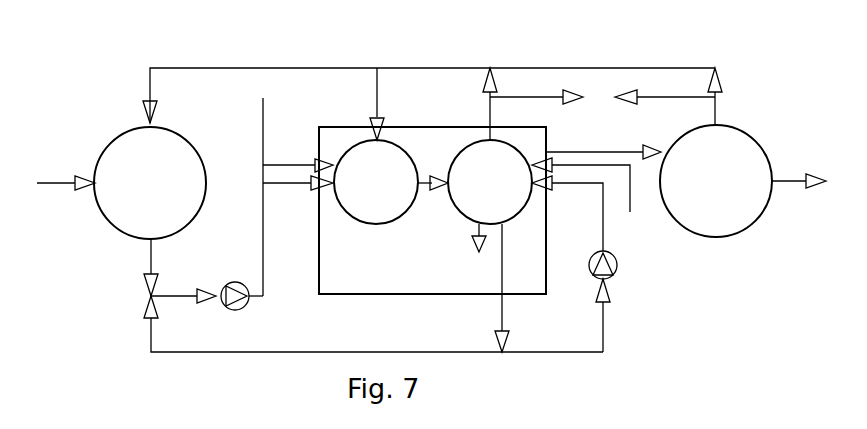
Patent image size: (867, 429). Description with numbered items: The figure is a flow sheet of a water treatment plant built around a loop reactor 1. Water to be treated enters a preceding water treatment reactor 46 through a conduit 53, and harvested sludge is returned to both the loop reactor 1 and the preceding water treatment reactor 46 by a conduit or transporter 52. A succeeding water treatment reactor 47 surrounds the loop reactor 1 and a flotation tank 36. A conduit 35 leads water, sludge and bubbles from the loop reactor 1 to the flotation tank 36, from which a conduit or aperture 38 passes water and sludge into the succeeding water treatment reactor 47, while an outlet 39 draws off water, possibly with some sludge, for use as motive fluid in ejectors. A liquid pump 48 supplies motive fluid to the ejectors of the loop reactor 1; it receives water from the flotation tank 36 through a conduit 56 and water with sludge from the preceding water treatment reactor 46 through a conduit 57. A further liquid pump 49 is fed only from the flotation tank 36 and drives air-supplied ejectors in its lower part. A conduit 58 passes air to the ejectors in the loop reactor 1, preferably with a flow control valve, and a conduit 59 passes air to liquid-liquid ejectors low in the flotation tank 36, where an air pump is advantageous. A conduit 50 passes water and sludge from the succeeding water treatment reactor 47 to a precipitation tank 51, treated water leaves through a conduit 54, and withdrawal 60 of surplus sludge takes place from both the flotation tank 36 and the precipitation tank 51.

The loop reactor 1 is at (357, 157).
The conduit 35 is at (427, 190).
The flotation tank 36 is at (470, 157).
The conduit or aperture 38 is at (470, 252).
The outlet 39 is at (507, 311).
The preceding water treatment reactor 46 is at (120, 200).
The succeeding water treatment reactor 47 is at (347, 282).
The liquid pump 48 is at (236, 277).
The further liquid pump 49 is at (618, 272).
The conduit 50 is at (587, 149).
The precipitation tank 51 is at (710, 218).
The conduit or transporter 52 is at (410, 60).
The conduit 53 is at (57, 178).
The conduit 54 is at (793, 168).
The conduit 56 is at (145, 332).
The conduit 57 is at (145, 257).
The conduit 58 is at (258, 130).
The conduit 59 is at (633, 200).
The withdrawal of surplus sludge 60 is at (602, 104).